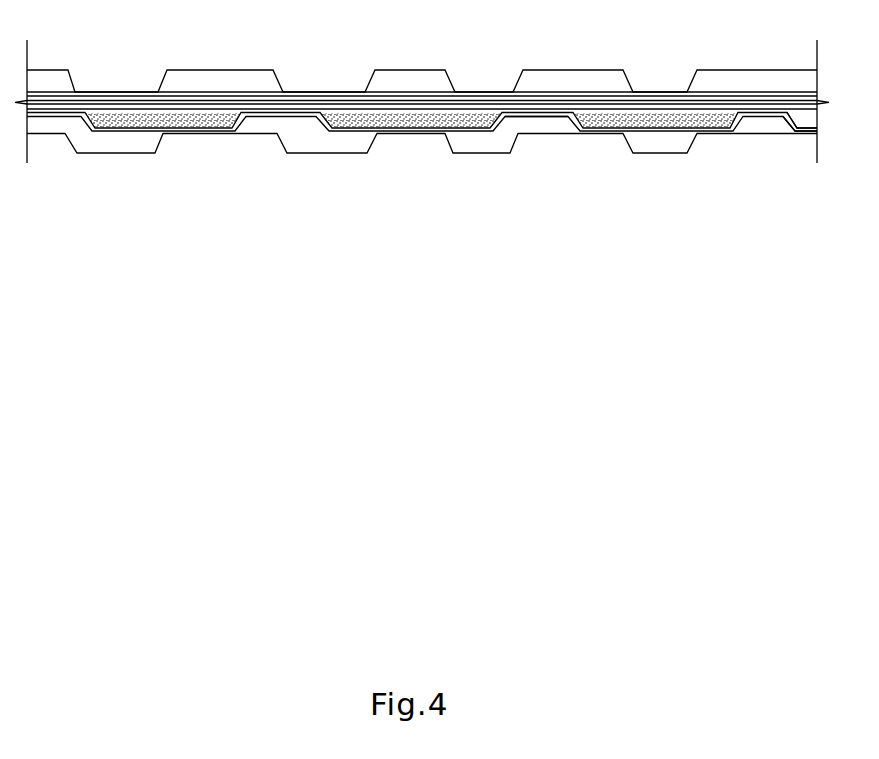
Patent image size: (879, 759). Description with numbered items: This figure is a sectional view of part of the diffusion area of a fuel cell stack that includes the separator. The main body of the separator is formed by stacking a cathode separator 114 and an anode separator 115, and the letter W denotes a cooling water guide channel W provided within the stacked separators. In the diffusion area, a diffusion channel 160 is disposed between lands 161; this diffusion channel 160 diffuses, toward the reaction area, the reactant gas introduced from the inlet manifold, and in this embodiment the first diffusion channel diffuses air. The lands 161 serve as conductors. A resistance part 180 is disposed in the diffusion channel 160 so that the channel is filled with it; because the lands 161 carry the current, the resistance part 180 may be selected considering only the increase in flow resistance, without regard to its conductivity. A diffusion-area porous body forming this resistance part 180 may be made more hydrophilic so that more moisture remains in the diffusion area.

The cathode separator 114 is at (793, 132).
The anode separator 115 is at (657, 155).
The diffusion channel 160 is at (217, 130).
The lands 161 is at (302, 115).
The resistance part 180 is at (403, 118).
The cooling water guide channel W is at (546, 121).